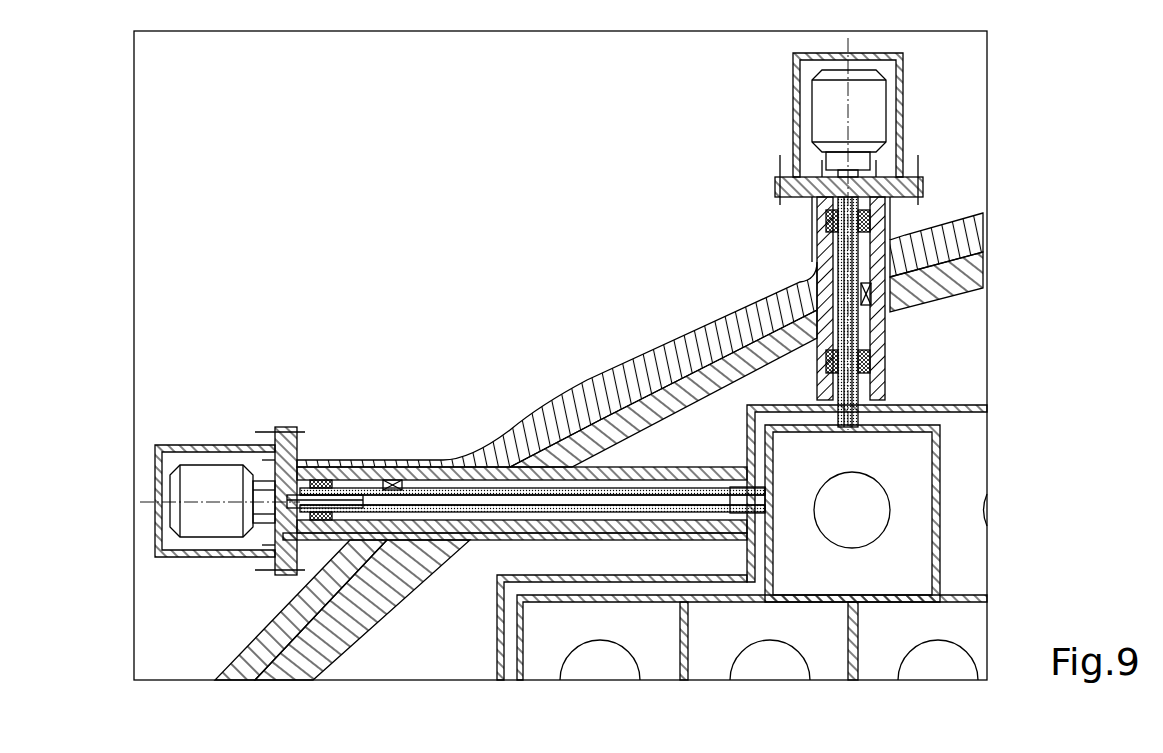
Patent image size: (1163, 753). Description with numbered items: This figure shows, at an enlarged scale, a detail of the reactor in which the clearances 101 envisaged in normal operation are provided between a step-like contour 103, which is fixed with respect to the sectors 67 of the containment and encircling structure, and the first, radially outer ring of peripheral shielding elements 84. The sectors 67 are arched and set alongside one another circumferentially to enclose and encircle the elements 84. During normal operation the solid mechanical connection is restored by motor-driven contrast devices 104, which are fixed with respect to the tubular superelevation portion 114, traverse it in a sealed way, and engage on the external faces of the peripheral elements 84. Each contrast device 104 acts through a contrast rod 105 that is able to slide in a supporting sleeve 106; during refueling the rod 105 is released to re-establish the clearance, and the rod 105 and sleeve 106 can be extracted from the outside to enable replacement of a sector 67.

The motor-driven contrast device 104 is at (786, 118).
The contrast rod 105 is at (370, 497).
The supporting sleeve 106 is at (415, 474).
The tubular superelevation portion 114 is at (603, 383).
The sector 67 is at (697, 378).
The shielding element 84 is at (848, 568).
The step-like contour 103 is at (497, 633).
The clearance 101 is at (550, 583).